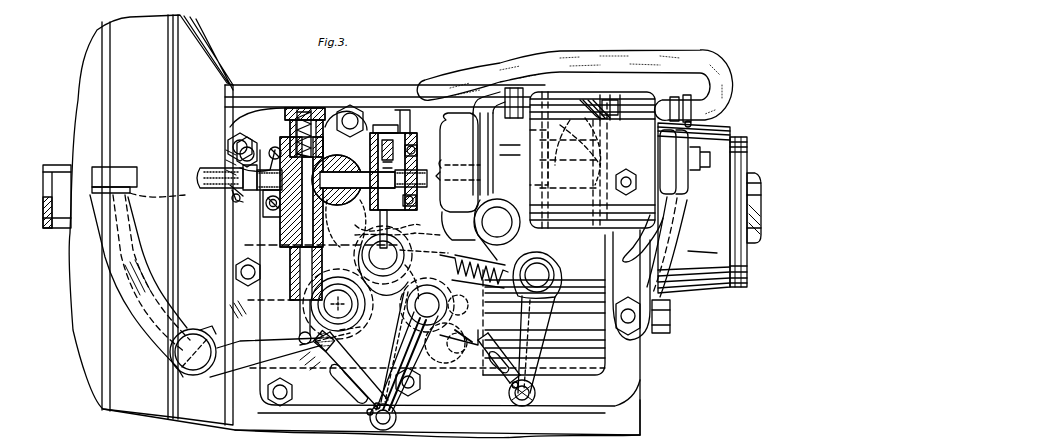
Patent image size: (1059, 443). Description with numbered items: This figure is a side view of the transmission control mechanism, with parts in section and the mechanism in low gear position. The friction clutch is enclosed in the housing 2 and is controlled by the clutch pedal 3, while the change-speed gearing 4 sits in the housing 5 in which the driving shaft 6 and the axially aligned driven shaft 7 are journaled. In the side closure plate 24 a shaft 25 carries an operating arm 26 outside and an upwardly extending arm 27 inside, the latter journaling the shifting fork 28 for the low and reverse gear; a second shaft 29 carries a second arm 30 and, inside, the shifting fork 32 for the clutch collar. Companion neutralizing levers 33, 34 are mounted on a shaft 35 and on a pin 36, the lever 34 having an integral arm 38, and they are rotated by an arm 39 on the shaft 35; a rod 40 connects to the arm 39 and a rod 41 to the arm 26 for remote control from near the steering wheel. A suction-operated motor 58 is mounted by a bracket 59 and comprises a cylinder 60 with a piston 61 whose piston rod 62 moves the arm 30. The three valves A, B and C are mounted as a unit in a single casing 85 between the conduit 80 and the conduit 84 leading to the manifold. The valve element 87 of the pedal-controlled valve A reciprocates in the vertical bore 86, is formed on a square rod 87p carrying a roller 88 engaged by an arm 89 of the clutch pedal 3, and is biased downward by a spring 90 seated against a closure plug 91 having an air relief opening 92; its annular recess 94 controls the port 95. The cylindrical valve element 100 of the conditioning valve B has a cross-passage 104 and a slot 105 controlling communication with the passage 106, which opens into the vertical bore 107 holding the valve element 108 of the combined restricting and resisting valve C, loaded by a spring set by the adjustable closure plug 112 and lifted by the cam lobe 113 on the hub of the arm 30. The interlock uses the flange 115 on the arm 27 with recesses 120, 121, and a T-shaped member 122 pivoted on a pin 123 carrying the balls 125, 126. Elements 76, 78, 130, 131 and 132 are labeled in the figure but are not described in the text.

The housing 2 is at (190, 43).
The clutch pedal 3 is at (98, 208).
The change-speed gearing 4 is at (646, 410).
The housing 5 is at (385, 130).
The driving shaft 6 is at (46, 167).
The driven shaft 7 is at (752, 173).
The side closure plate 24 is at (262, 108).
The shaft 25 is at (560, 272).
The operating arm 26 is at (553, 355).
The upwardly extending arm 27 is at (458, 222).
The shifting fork 28 is at (510, 210).
The second shaft 29 is at (388, 300).
The second arm 30 is at (380, 228).
The shifting fork 32 is at (412, 112).
The lever 33 is at (442, 237).
The lever 34 is at (316, 245).
The shaft 35 is at (402, 330).
The pin 36 is at (352, 345).
The integral arm 38 is at (360, 410).
The arm 39 is at (418, 380).
The rod 40 is at (320, 362).
The rod 41 is at (480, 372).
The suction-operated motor 58 is at (552, 74).
The bracket 59 is at (677, 234).
The cylinder 60 is at (622, 97).
The piston 61 is at (590, 95).
The piston rod 62 is at (448, 167).
The hose 76 is at (690, 55).
The pipe 78 is at (445, 88).
The conduit 80 is at (458, 162).
The conduit 84 is at (208, 168).
The casing 85 is at (280, 210).
The vertical bore 86 is at (263, 222).
The valve element 87 is at (290, 118).
The square rod 87p is at (262, 305).
The roller 88 is at (300, 336).
The arm 89 is at (245, 345).
The spring 90 is at (255, 112).
The closure plug 91 is at (308, 112).
The air relief opening 92 is at (302, 108).
The annular recess 94 is at (266, 204).
The port 95 is at (230, 188).
The cylindrical valve element 100 is at (368, 253).
The cross-passage 104 is at (376, 130).
The slot 105 is at (372, 125).
The passage 106 is at (408, 170).
The vertical bore 107 is at (392, 223).
The valve element 108 is at (420, 198).
The closure plug 112 is at (414, 145).
The cam lobe 113 is at (433, 247).
The flange 115 is at (555, 283).
The recess 120 is at (540, 316).
The recess 121 is at (555, 328).
The T-shaped member 122 is at (474, 264).
The pin 123 is at (455, 418).
The ball 125 is at (548, 255).
The ball 126 is at (360, 270).
The pin 130 is at (500, 322).
The rod 131 is at (386, 347).
The line 132 is at (560, 338).
The pedal-controlled valve A is at (298, 89).
The conditioning valve B is at (318, 115).
The combined restricting and resisting valve C is at (392, 126).